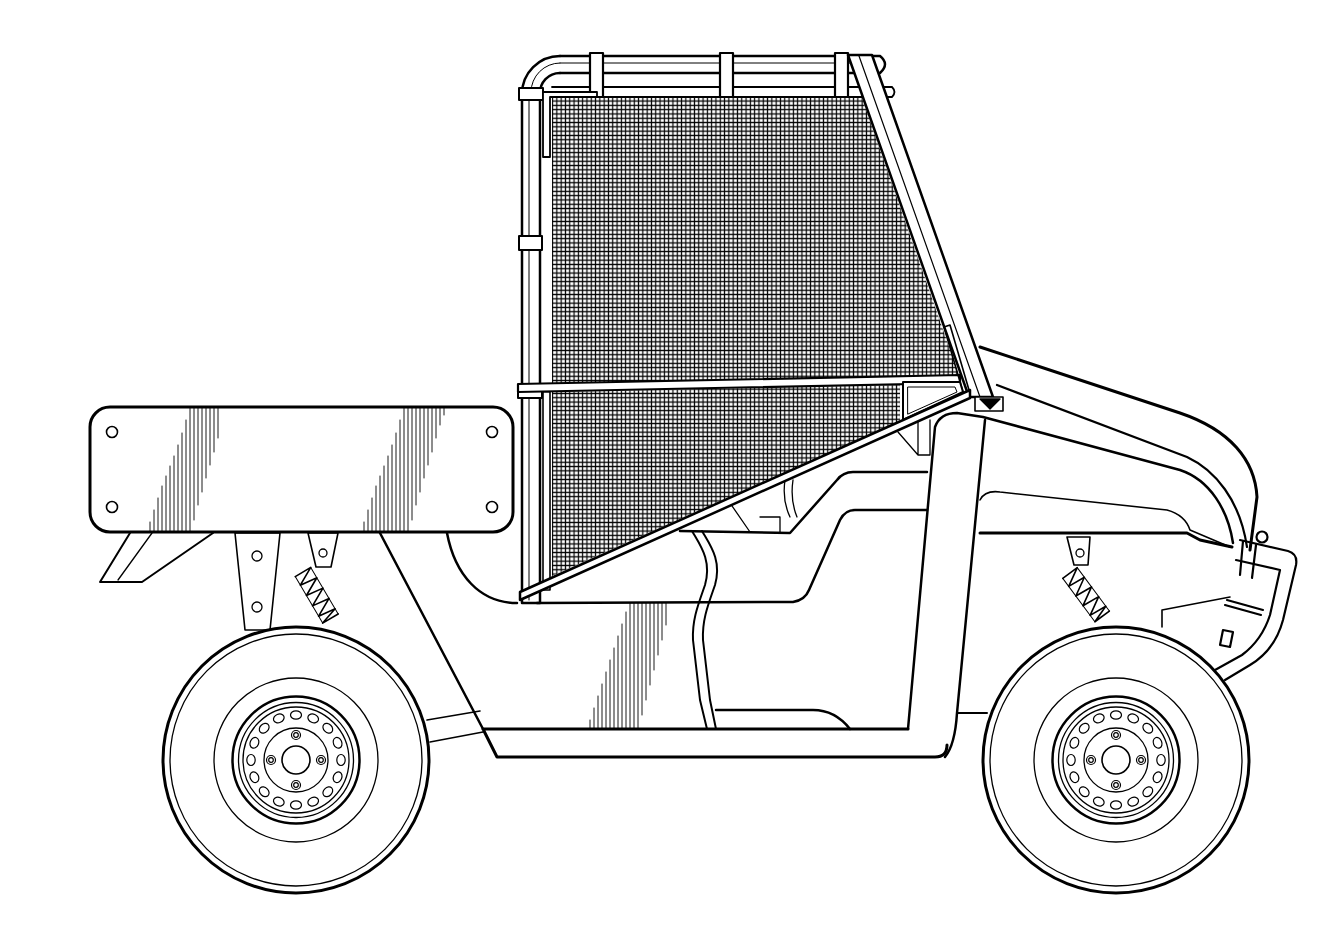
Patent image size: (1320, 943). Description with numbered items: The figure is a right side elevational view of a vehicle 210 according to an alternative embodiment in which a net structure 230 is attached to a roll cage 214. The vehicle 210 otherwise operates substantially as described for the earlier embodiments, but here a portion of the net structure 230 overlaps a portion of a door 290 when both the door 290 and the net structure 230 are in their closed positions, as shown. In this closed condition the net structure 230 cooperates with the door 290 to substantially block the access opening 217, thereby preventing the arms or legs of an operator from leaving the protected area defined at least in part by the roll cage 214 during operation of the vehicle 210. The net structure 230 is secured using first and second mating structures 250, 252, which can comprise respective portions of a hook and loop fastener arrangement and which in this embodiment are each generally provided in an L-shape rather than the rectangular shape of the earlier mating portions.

The vehicle 210 is at (1184, 172).
The roll cage 214 is at (957, 121).
The access opening 217 is at (937, 266).
The first mating structure 250 is at (948, 338).
The second mating structure 252 is at (550, 168).
The net structure 230 is at (867, 460).
The door 290 is at (760, 688).